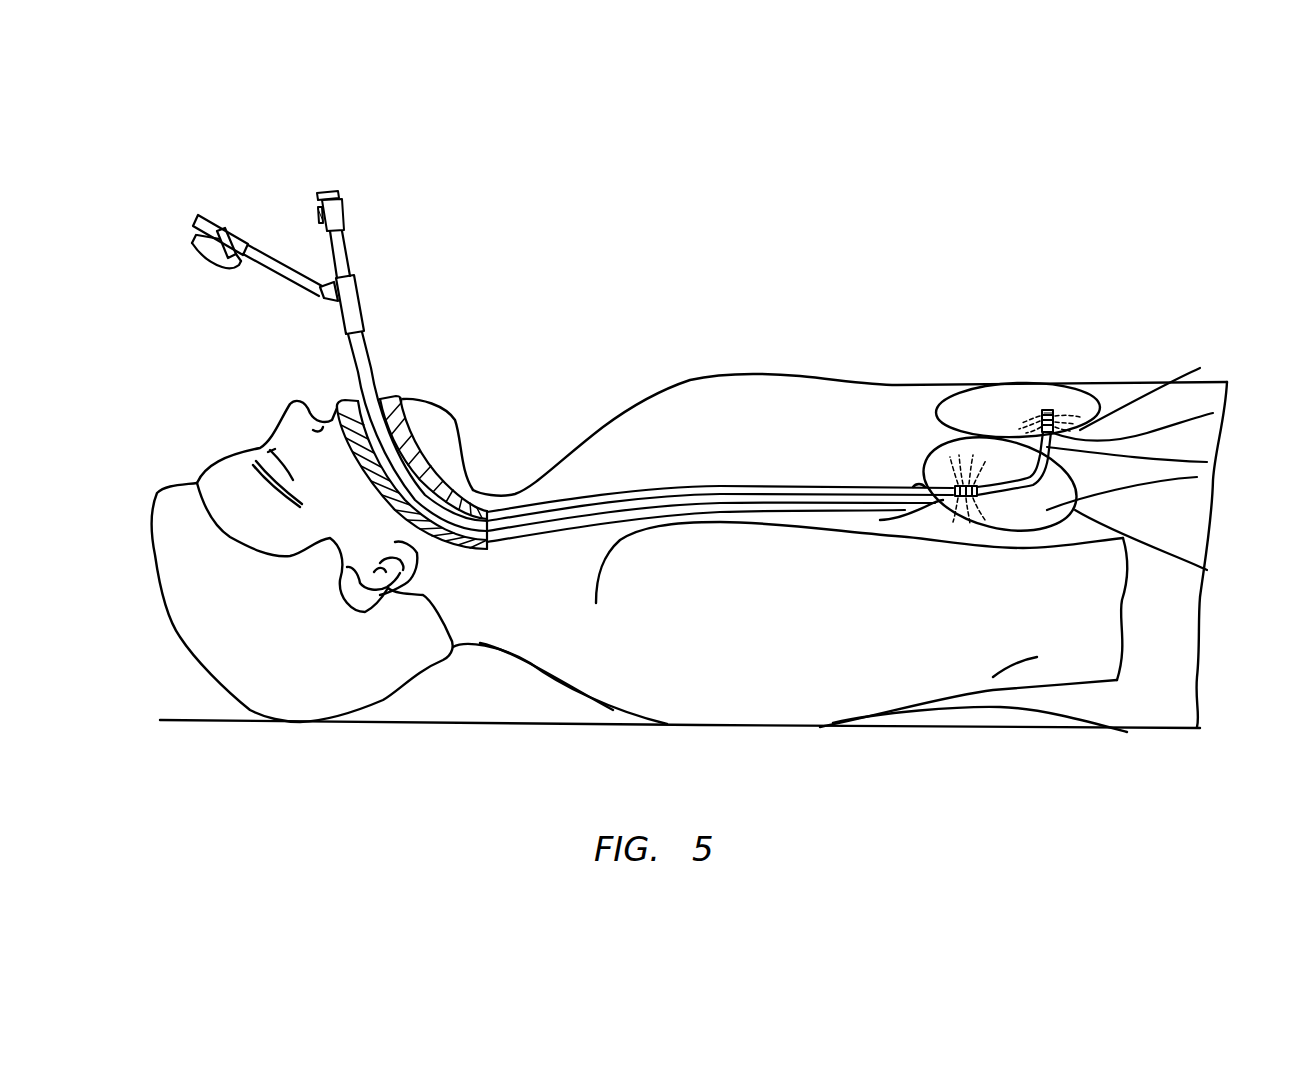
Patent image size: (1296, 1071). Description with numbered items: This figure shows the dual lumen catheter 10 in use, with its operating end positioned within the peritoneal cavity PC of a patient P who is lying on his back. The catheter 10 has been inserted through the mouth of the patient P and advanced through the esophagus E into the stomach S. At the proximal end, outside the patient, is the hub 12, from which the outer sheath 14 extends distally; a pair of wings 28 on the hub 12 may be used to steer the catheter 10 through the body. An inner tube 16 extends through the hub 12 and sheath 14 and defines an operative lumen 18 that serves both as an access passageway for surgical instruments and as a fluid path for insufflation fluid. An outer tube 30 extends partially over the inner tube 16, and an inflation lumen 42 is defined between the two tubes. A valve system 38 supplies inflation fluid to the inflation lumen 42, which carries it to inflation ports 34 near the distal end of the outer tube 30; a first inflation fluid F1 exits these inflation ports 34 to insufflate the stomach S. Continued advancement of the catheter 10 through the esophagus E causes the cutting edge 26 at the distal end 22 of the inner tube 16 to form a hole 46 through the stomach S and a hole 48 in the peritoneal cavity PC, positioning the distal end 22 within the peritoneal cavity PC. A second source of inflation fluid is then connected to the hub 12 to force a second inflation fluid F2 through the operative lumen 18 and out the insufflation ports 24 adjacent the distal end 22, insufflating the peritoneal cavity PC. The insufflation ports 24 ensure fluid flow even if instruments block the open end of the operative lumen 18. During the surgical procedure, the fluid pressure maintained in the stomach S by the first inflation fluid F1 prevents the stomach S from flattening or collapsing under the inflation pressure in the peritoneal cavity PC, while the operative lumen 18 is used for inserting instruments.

The dual lumen catheter 10 is at (240, 363).
The hub 12 is at (338, 200).
The outer sheath 14 is at (347, 253).
The inner tube 16 is at (1197, 477).
The operative lumen 18 is at (330, 192).
The distal end of inner tube 22 is at (1200, 368).
The insufflation ports 24 is at (1055, 418).
The cutting edge 26 is at (1050, 410).
The wings 28 is at (318, 219).
The outer tube 30 is at (857, 500).
The inflation ports 34 is at (997, 518).
The valve system 38 is at (194, 238).
The inflation lumen 42 is at (200, 222).
The hole through stomach 46 is at (1207, 462).
The hole in peritoneal cavity 48 is at (1213, 413).
The patient P is at (222, 462).
The peritoneal cavity PC is at (960, 385).
The esophagus E is at (580, 500).
The stomach S is at (1207, 570).
The first inflation fluid F1 is at (967, 497).
The second inflation fluid F2 is at (1032, 417).